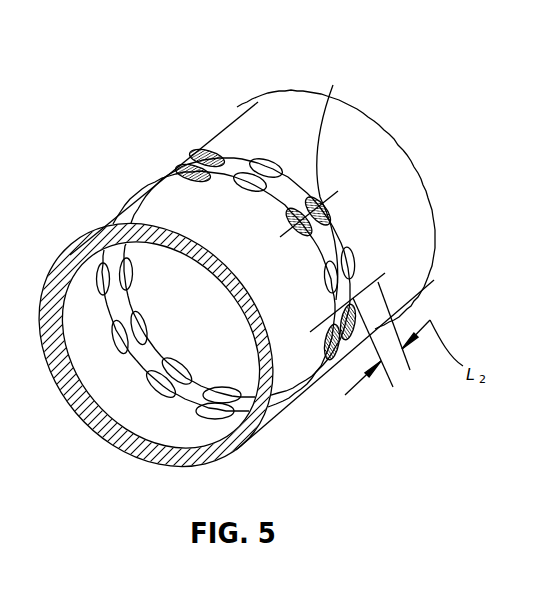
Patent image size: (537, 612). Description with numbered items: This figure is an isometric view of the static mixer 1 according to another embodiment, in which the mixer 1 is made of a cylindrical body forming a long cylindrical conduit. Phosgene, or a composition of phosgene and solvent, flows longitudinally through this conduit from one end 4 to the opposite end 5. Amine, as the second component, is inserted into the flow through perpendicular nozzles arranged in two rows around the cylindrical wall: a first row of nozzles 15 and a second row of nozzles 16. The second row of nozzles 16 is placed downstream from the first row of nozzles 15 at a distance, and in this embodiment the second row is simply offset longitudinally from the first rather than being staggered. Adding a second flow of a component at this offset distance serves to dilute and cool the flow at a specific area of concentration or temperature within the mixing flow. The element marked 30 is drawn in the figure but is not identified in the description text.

The mixer 1 is at (432, 204).
The end 4 is at (88, 424).
The opposite end 5 is at (400, 134).
The first row of nozzles 15 is at (176, 163).
The second row of nozzles 16 is at (200, 144).
The curve 30 is at (333, 85).